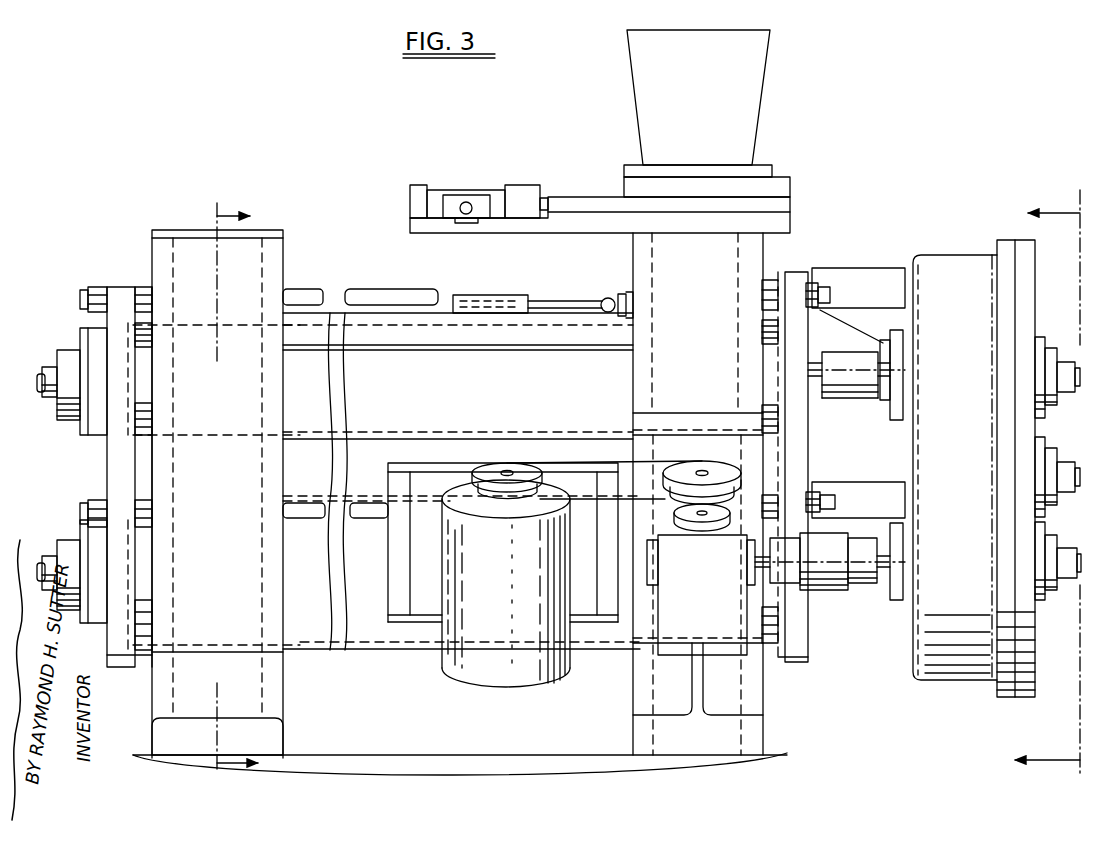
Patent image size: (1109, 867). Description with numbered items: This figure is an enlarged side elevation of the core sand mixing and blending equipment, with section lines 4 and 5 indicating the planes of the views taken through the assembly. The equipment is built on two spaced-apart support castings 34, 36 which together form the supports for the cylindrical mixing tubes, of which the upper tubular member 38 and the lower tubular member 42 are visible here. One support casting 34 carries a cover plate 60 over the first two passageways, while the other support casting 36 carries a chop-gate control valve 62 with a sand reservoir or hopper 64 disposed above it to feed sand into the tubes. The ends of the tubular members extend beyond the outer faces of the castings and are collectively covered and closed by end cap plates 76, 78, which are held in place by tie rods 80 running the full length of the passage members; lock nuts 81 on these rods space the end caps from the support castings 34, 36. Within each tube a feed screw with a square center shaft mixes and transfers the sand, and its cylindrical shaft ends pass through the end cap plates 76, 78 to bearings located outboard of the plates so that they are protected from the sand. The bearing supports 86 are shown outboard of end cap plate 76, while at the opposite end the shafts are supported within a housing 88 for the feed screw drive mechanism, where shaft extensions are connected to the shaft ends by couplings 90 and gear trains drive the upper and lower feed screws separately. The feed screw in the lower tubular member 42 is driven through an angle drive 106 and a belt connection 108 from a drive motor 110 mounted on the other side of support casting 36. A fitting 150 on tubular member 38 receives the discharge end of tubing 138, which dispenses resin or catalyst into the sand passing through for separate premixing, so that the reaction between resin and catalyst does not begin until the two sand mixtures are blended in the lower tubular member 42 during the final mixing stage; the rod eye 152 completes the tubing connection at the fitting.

The section line 4- 4 is at (237, 494).
The section line 5- 5 is at (1047, 482).
The support casting 34 is at (285, 717).
The support casting 36 is at (642, 688).
The cylindrical mixing tube 38 is at (445, 312).
The cylindrical mixing tube 42 is at (365, 628).
The cover plate 60 is at (165, 233).
The chop-gate control valve 62 is at (780, 210).
The sand reservoir or hopper 64 is at (735, 125).
The end cap plate 76 is at (120, 447).
The end cap plate 78 is at (795, 445).
The tie rod 80 is at (83, 298).
The lock nut 81 is at (97, 288).
The bearing support 86 is at (72, 343).
The housing 88 is at (960, 263).
The coupling 90 is at (872, 382).
The angle drive 106 is at (733, 617).
The belt connection 108 is at (603, 463).
The drive motor 110 is at (515, 668).
The tubing 138 is at (573, 300).
The fitting 150 is at (503, 295).
The rod eye 152 is at (605, 313).